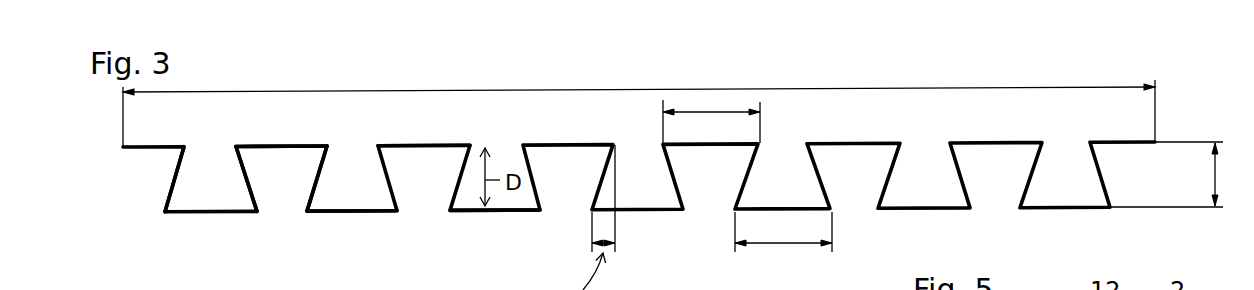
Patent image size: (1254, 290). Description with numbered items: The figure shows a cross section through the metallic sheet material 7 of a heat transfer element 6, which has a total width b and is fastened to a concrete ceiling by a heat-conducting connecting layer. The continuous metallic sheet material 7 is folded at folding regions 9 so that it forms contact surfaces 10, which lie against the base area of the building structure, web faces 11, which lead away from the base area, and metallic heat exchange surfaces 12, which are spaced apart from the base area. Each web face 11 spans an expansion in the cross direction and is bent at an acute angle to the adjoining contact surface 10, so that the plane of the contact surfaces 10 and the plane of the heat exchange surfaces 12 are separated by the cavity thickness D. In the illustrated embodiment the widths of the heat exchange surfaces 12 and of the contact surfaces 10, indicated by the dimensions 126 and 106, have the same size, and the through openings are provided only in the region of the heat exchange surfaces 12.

The heat transfer element 6 is at (622, 86).
The metallic sheet material 7 is at (869, 136).
The folding region 9 is at (234, 144).
The contact surface 10 is at (401, 140).
The web face 11 is at (242, 182).
The heat exchange surface 12 is at (467, 219).
The flange width dimension 106 is at (714, 108).
The lower flange width dimension 126 is at (767, 247).